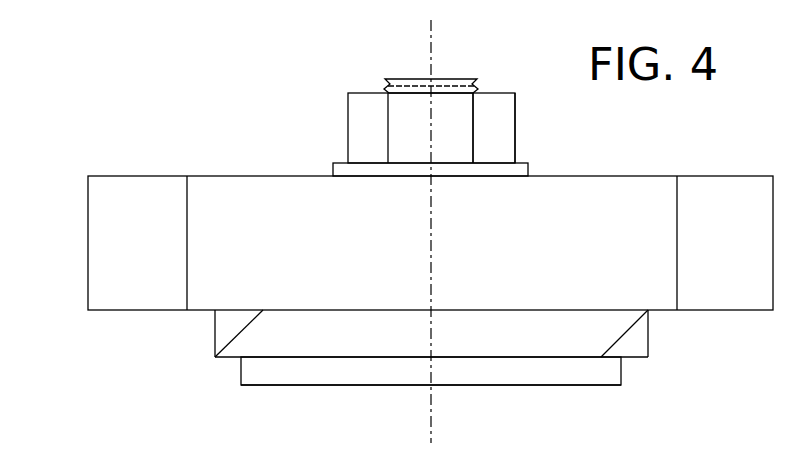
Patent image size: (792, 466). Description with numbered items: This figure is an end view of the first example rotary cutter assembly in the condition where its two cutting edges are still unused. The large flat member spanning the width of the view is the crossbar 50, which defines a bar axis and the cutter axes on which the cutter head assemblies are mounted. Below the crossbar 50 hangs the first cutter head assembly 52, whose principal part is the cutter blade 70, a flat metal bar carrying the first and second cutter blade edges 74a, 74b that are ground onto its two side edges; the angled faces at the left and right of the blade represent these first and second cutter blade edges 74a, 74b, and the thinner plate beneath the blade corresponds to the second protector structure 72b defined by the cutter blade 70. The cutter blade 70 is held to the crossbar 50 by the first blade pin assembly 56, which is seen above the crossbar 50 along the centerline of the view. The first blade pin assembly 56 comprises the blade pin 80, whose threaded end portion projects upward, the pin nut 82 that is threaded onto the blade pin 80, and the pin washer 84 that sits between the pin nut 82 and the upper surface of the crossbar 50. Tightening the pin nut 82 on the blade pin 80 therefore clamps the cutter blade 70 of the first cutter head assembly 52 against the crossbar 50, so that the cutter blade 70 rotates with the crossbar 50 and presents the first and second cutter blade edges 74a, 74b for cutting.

The crossbar 50 is at (617, 201).
The first cutter head assembly 52 is at (312, 400).
The first blade pin assembly 56 is at (358, 86).
The cutter blade 70 is at (516, 340).
The second protector structure 72b is at (587, 372).
The first cutter blade edge 74a is at (215, 357).
The second cutter blade edge 74b is at (648, 310).
The blade pin 80 is at (451, 78).
The pin nut 82 is at (502, 124).
The pin washer 84 is at (528, 168).